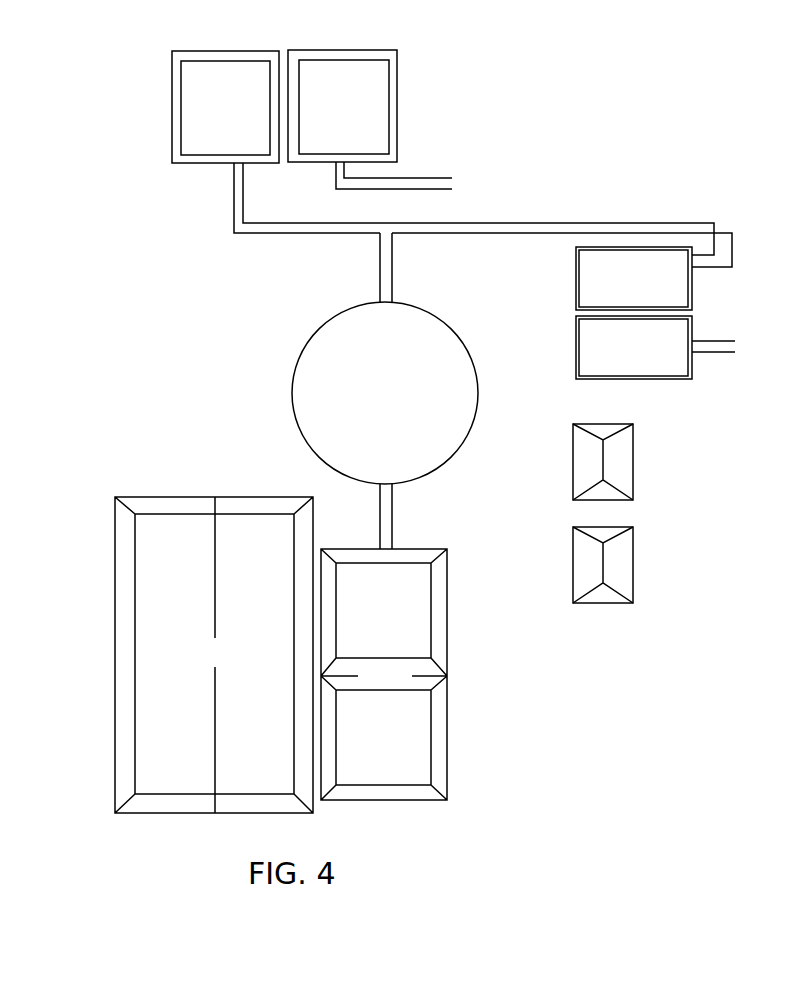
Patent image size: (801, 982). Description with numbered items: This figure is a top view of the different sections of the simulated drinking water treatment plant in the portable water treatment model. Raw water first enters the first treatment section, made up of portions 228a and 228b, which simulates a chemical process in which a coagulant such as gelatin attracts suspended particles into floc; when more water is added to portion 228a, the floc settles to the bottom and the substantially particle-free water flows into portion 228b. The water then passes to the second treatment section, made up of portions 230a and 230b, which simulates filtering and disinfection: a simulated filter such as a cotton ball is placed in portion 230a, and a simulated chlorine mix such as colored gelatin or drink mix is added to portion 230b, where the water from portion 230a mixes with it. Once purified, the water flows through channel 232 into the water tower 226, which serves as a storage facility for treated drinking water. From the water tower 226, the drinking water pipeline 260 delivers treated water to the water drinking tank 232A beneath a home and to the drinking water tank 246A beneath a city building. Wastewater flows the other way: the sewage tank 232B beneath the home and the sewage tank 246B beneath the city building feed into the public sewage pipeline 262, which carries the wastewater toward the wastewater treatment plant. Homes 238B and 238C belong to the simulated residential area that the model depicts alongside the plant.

The drinking water tank 246A is at (252, 116).
The sewage tank 246B is at (369, 116).
The drinking water pipeline 260 is at (654, 222).
The public sewage pipeline 262 is at (446, 178).
The water drinking tank 232A is at (659, 291).
The sewage tank 232B is at (659, 359).
The water tower 226 is at (403, 404).
The channel 232 is at (393, 523).
The home 238B is at (633, 472).
The home 238C is at (633, 568).
The portion of first treatment section 228a is at (198, 665).
The portion of first treatment section 228b is at (278, 665).
The portion of second treatment section 230a is at (410, 756).
The portion of second treatment section 230b is at (410, 624).